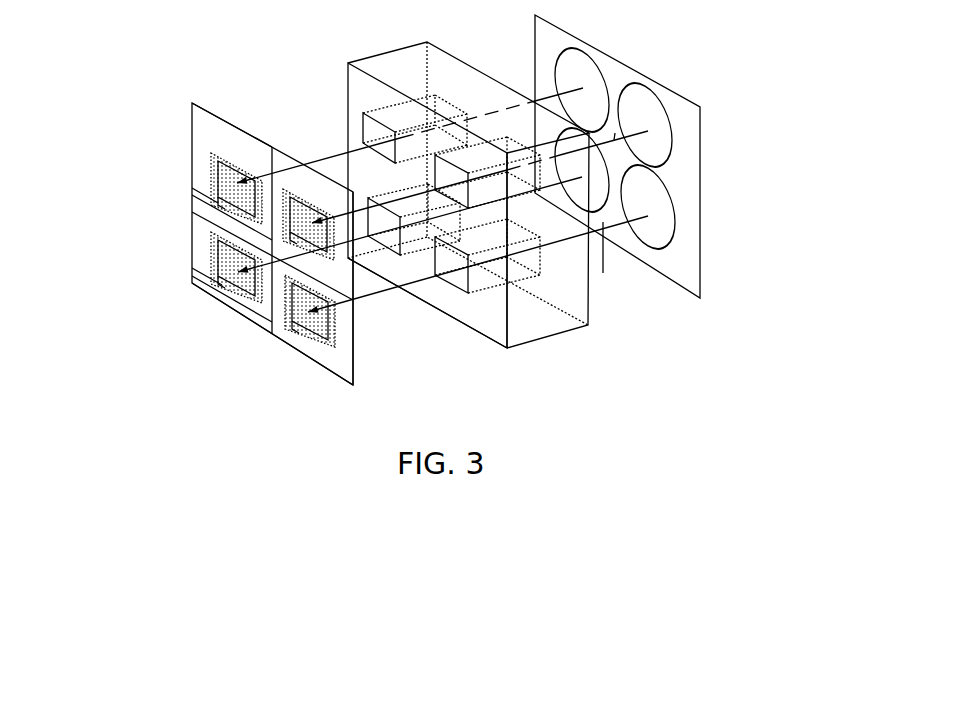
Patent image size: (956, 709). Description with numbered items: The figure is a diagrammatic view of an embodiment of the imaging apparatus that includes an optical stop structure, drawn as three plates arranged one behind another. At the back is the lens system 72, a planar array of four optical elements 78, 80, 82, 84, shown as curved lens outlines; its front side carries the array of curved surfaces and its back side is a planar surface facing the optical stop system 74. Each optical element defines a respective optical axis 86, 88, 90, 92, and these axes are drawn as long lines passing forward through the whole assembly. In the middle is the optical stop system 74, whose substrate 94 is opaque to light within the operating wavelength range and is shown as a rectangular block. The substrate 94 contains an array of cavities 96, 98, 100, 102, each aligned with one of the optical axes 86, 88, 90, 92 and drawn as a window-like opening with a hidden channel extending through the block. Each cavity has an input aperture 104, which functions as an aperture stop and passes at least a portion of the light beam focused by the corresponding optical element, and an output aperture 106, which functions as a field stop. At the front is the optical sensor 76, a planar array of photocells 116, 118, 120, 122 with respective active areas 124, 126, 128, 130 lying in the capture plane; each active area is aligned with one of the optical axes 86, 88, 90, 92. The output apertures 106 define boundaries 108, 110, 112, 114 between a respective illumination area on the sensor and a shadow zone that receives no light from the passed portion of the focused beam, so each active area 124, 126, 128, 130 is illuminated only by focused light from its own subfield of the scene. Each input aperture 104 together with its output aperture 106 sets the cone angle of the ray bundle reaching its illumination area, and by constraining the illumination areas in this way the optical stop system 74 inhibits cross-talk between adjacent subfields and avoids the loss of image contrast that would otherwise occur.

The lens system 72 is at (718, 220).
The optical stop system 74 is at (620, 318).
The optical sensor 76 is at (140, 308).
The optical element 78 is at (583, 53).
The optical element 80 is at (648, 87).
The optical element 82 is at (660, 247).
The optical element 84 is at (603, 158).
The optical axis 86 is at (555, 97).
The optical axis 88 is at (615, 133).
The optical axis 90 is at (603, 222).
The optical axis 92 is at (557, 180).
The substrate 94 is at (548, 338).
The cavity 96 is at (383, 117).
The cavity 98 is at (490, 150).
The cavity 100 is at (520, 263).
The cavity 102 is at (410, 207).
The input aperture 104 is at (462, 118).
The output aperture 106 is at (377, 138).
The boundary 108 is at (215, 172).
The boundary 110 is at (303, 197).
The boundary 112 is at (353, 342).
The boundary 114 is at (215, 265).
The photocell 116 is at (192, 127).
The photocell 118 is at (362, 293).
The photocell 120 is at (330, 377).
The photocell 122 is at (192, 232).
The active area 124 is at (230, 162).
The active area 126 is at (303, 237).
The active area 128 is at (307, 328).
The active area 130 is at (237, 295).